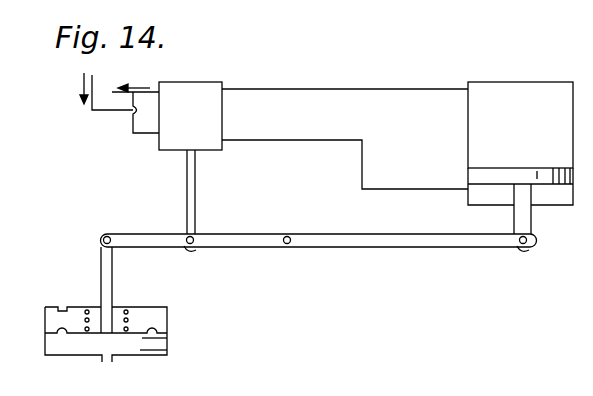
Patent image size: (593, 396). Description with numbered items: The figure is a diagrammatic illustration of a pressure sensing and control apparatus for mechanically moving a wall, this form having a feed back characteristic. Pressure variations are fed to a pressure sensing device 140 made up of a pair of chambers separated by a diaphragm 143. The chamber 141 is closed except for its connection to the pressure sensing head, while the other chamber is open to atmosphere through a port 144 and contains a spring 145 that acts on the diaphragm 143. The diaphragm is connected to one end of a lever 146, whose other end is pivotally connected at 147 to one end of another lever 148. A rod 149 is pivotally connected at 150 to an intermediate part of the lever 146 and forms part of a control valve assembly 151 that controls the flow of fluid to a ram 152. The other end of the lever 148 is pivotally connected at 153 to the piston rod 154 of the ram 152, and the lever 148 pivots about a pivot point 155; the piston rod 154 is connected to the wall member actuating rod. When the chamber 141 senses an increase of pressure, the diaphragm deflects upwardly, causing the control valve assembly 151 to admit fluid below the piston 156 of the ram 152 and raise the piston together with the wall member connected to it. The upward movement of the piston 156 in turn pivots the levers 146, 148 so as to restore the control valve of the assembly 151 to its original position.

The pressure sensing device 140 is at (167, 317).
The chamber 141 is at (167, 350).
The diaphragm 143 is at (167, 338).
The port 144 is at (73, 288).
The spring 145 is at (128, 318).
The lever 146 is at (132, 233).
The pivotal connection 147 is at (290, 235).
The lever 148 is at (423, 224).
The rod 149 is at (195, 185).
The pivotal connection 150 is at (197, 243).
The control valve assembly 151 is at (203, 125).
The ram 152 is at (483, 130).
The pivotal connection 153 is at (530, 246).
The piston rod 154 is at (520, 218).
The pivot point 155 is at (407, 250).
The piston 156 is at (482, 175).